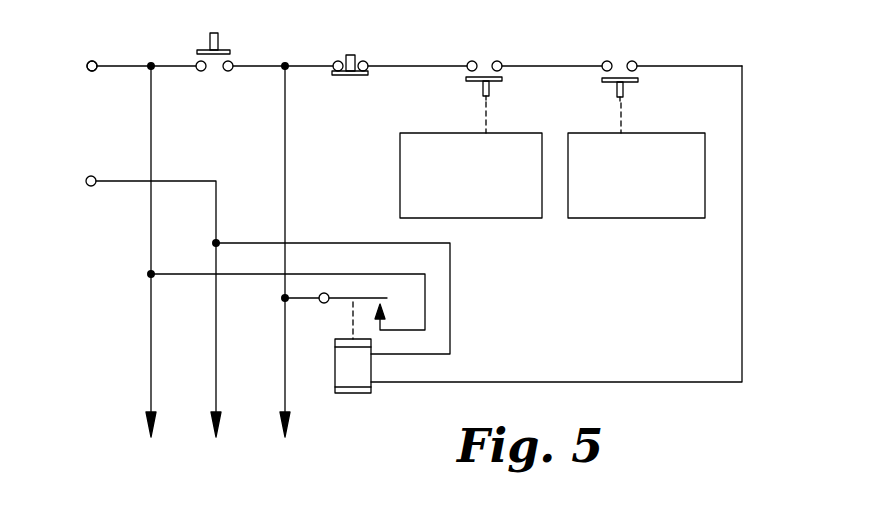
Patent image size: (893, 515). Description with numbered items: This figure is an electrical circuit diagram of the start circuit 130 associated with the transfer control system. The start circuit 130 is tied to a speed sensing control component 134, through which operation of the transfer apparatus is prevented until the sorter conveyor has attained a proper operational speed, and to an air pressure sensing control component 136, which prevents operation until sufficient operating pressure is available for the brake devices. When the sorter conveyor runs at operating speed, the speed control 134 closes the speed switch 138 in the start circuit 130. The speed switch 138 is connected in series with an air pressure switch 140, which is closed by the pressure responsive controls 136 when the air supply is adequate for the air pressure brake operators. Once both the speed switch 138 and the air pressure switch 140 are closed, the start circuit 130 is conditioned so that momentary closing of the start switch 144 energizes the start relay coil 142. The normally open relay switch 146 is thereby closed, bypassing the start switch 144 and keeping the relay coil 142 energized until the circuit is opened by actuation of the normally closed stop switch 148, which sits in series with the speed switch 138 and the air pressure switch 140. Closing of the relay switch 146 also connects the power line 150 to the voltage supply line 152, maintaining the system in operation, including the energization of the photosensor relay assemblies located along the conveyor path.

The start circuit 130 is at (765, 91).
The speed sensing control component 134 is at (400, 170).
The air pressure sensing control component 136 is at (613, 220).
The speed switch 138 is at (482, 76).
The air pressure switch 140 is at (620, 76).
The start relay coil 142 is at (352, 380).
The start switch 144 is at (220, 55).
The normally open relay switch 146 is at (367, 295).
The normally closed stop switch 148 is at (357, 58).
The power line 150 is at (111, 60).
The voltage supply line 152 is at (285, 365).